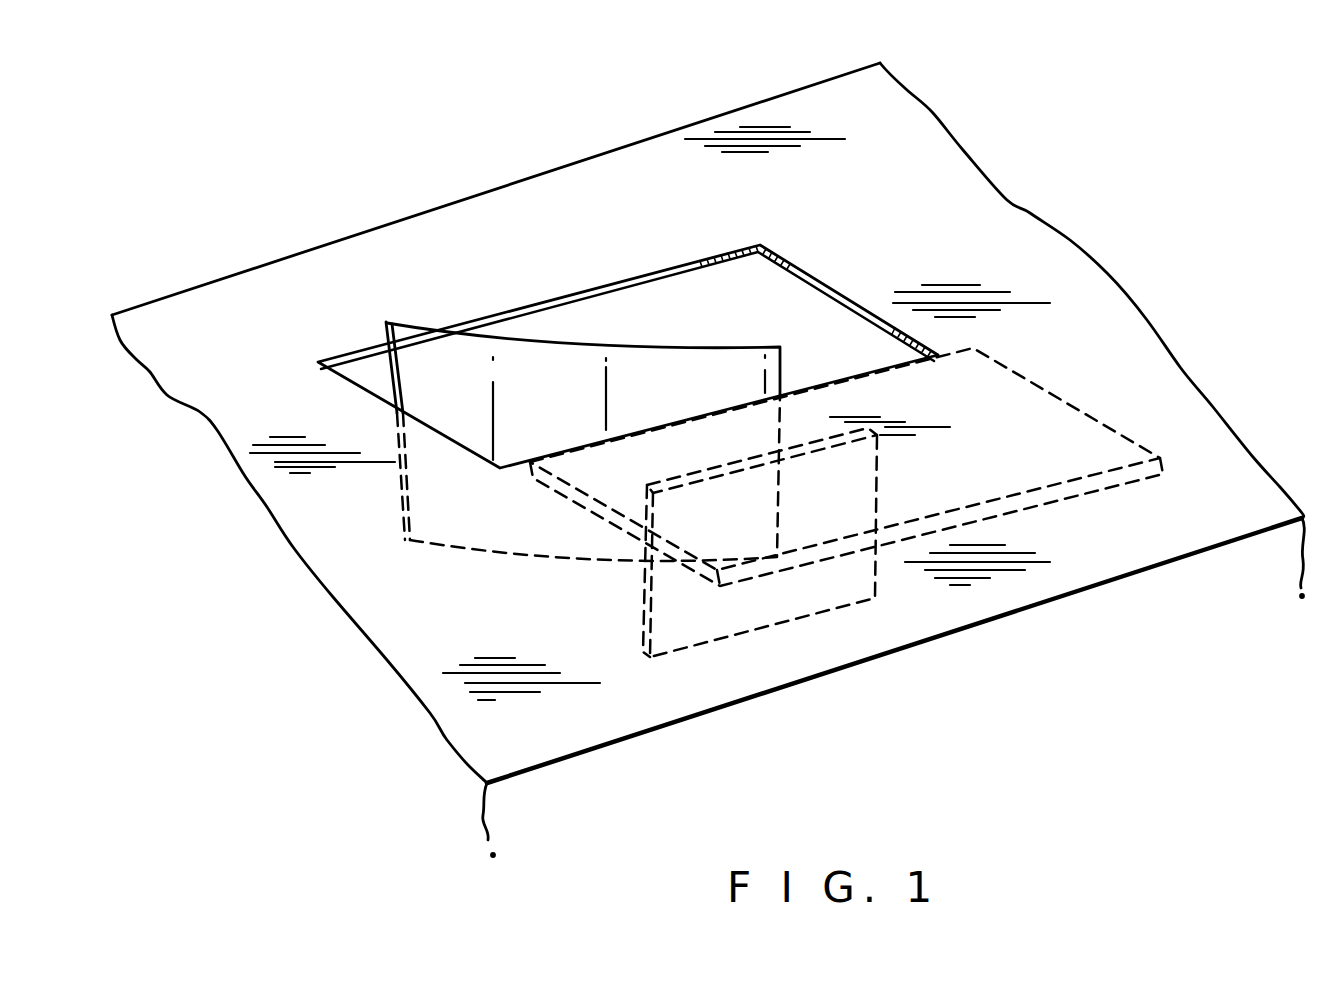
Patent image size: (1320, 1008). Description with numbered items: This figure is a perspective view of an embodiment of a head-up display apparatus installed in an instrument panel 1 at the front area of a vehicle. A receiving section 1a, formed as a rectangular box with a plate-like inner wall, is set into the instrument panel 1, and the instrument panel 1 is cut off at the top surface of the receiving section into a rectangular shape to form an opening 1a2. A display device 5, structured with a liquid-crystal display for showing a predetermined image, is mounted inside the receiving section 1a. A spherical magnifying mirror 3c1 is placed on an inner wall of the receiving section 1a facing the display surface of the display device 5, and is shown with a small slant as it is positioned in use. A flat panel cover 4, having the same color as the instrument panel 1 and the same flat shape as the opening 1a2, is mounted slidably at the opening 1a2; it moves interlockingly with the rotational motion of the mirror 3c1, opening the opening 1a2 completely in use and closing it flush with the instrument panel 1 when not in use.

The instrument panel 1 is at (673, 183).
The receiving section 1a is at (830, 333).
The opening 1a2 is at (660, 283).
The spherical magnifying mirror 3c1 is at (420, 343).
The panel cover 4 is at (1083, 423).
The display device 5 is at (786, 611).